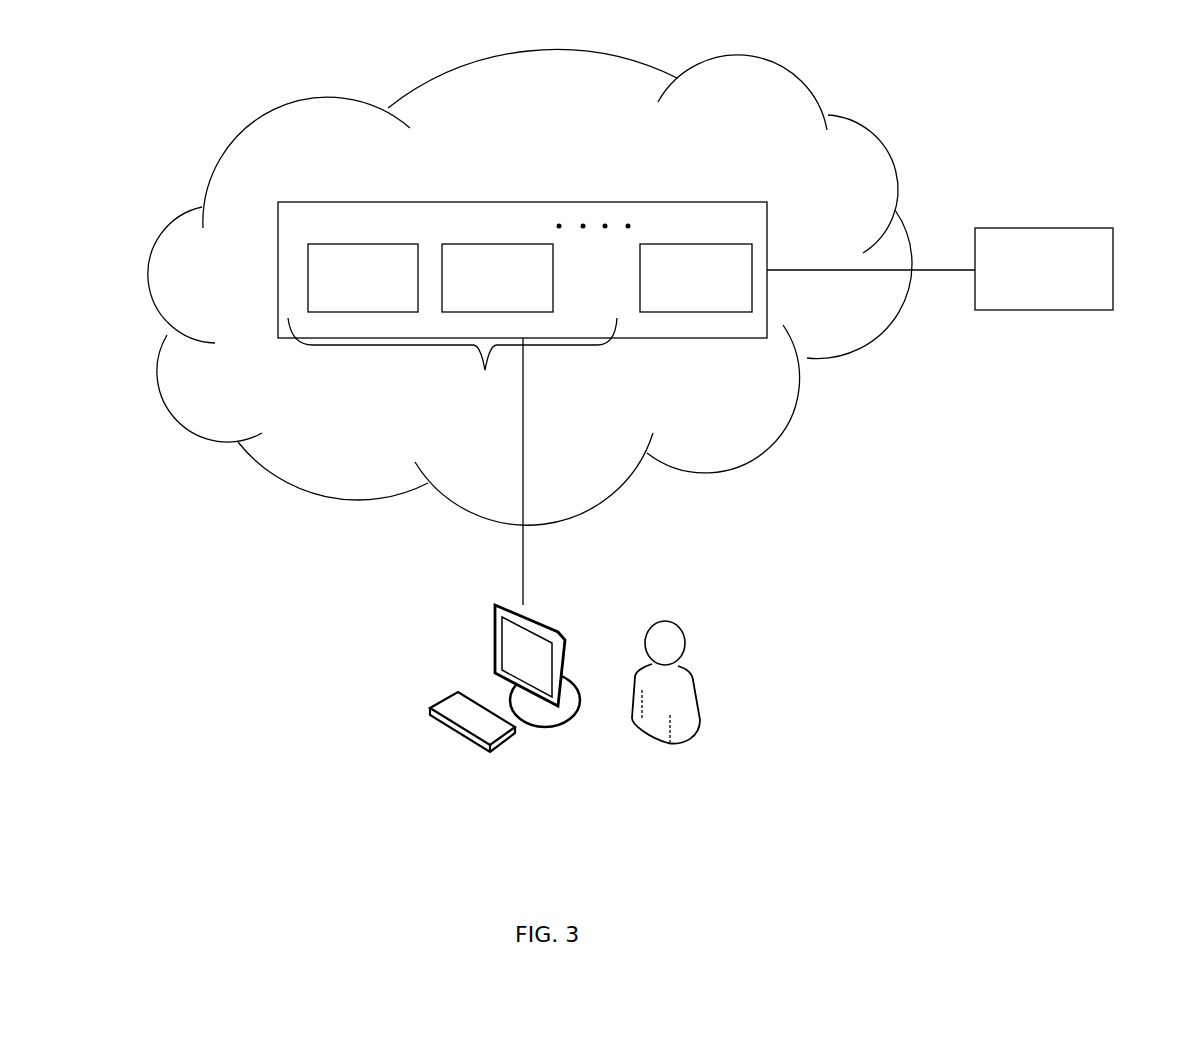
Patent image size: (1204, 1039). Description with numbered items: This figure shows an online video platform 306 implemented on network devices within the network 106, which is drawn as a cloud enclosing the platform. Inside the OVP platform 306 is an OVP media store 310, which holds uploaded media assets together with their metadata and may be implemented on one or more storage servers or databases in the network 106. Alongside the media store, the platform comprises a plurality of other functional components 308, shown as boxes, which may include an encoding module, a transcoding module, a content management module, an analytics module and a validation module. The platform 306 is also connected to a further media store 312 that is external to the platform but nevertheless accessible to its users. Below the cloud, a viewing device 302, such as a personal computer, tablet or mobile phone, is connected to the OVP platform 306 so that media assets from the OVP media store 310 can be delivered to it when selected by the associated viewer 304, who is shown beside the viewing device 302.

The network 106 is at (807, 78).
The viewing device 302 is at (495, 635).
The viewer 304 is at (682, 650).
The online video platform 306 is at (620, 203).
The other functional components 308 is at (452, 321).
The OVP media store 310 is at (747, 242).
The further media store 312 is at (1113, 226).